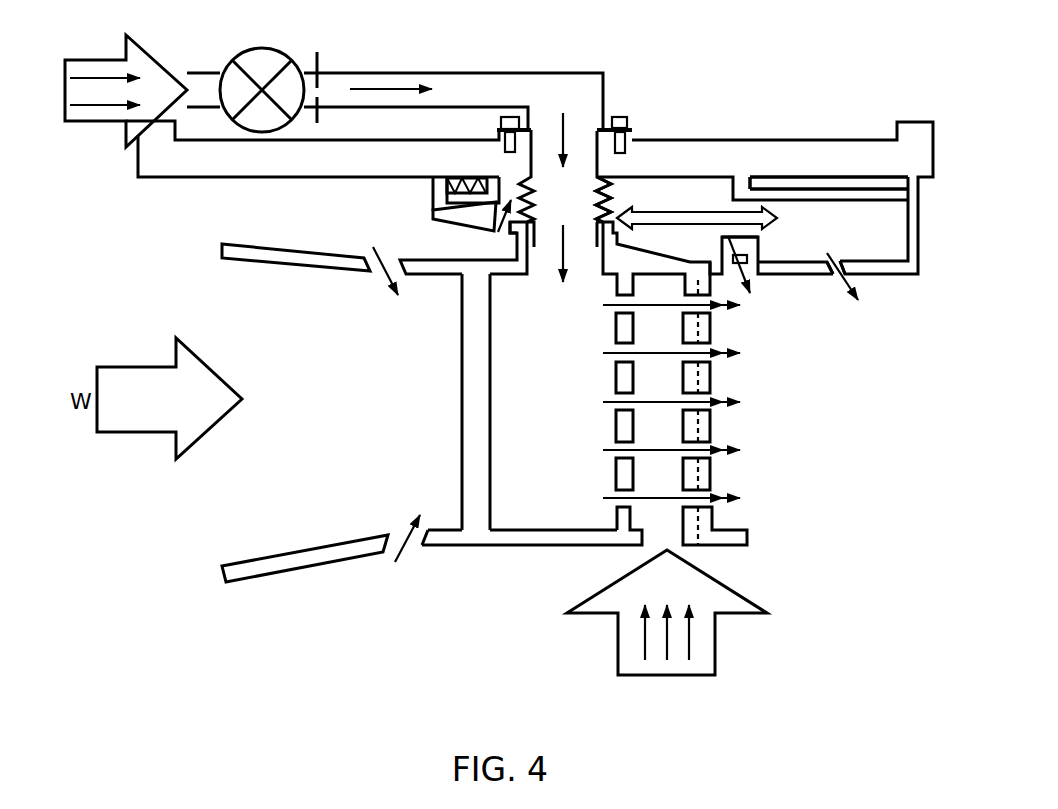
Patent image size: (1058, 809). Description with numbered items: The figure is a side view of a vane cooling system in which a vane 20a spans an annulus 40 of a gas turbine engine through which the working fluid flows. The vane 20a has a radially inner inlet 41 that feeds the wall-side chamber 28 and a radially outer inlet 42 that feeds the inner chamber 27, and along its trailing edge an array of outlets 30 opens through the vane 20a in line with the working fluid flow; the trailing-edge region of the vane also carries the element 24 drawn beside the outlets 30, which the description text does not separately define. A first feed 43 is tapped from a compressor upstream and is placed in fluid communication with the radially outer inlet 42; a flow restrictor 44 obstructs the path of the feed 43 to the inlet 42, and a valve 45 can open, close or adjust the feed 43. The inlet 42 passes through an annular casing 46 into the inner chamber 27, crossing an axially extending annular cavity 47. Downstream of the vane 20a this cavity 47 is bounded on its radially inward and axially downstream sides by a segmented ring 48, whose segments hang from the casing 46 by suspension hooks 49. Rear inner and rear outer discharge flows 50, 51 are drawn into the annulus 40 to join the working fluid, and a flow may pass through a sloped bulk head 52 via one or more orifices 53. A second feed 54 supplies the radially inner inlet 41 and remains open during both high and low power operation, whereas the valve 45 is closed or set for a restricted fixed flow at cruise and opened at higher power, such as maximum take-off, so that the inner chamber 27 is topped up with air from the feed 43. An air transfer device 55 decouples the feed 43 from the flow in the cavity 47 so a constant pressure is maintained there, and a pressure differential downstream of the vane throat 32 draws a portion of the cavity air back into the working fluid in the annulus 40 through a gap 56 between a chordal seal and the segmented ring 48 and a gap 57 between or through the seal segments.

The vane 20a is at (470, 392).
The louver vane 24 is at (705, 482).
The inner chamber 27 is at (532, 406).
The wall-side chamber 28 is at (668, 432).
The outlets 30 is at (712, 345).
The vane throat 32 is at (700, 555).
The annulus 40 is at (303, 419).
The radially inner inlet 41 is at (655, 540).
The radially outer inlet 42 is at (569, 88).
The first feed 43 is at (100, 116).
The flow restrictor 44 is at (320, 64).
The valve 45 is at (263, 50).
The annular casing 46 is at (183, 163).
The axially extending annular cavity 47 is at (893, 236).
The segmented ring 48 is at (890, 270).
The suspension hooks 49 is at (745, 182).
The rear inner discharge flow 50 is at (402, 537).
The rear outer discharge flow 51 is at (388, 275).
The sloped bulk head 52 is at (458, 213).
The orifices 53 is at (497, 233).
The second feed 54 is at (623, 660).
The air transfer device 55 is at (613, 207).
The gap 56 is at (745, 257).
The gap 57 is at (835, 252).